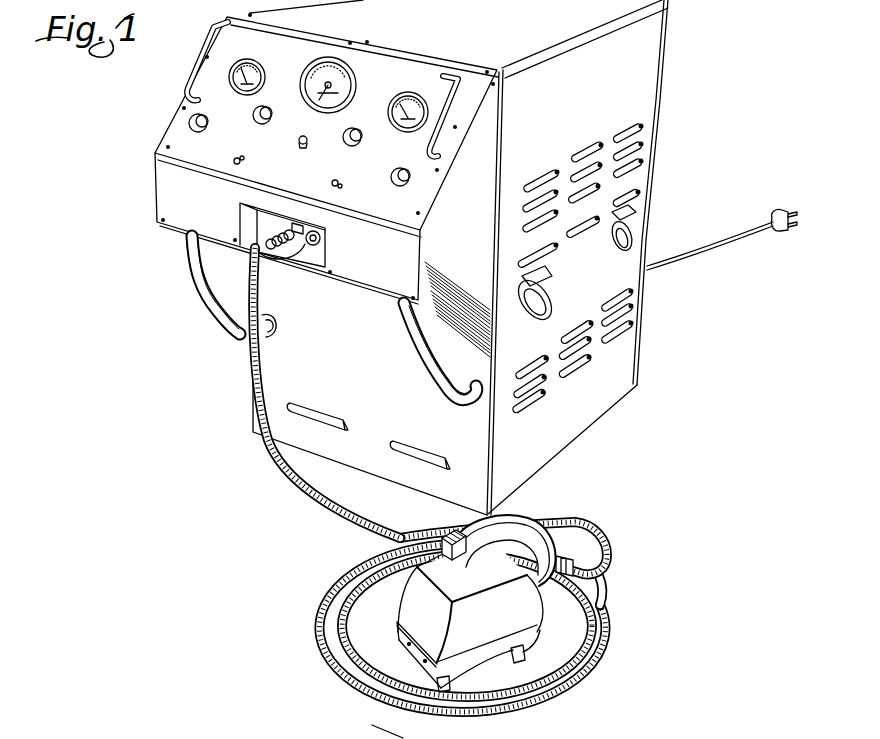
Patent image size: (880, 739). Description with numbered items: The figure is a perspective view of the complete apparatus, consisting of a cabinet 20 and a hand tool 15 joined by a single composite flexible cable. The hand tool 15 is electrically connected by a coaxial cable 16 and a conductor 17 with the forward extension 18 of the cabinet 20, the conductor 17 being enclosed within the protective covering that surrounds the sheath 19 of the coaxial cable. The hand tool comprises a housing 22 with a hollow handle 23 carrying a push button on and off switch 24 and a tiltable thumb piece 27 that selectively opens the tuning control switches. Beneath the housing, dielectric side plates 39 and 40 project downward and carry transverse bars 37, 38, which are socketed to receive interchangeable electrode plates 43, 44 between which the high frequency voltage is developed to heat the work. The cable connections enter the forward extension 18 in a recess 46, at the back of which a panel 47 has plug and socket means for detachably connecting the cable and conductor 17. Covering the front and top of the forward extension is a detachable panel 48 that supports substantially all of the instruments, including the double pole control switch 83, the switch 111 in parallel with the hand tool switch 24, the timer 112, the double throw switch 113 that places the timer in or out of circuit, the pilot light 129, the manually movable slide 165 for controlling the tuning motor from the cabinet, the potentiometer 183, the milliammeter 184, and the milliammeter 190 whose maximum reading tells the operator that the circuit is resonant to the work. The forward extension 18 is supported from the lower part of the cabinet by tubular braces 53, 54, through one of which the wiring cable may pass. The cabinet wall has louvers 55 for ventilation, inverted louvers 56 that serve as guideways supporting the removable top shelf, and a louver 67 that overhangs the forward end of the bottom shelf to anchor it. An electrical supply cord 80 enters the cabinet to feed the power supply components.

The hand tool 15 is at (427, 605).
The coaxial cable 16 is at (335, 507).
The conductor 17 is at (278, 262).
The forward extension 18 is at (463, 192).
The sheath 19 is at (252, 272).
The cabinet 20 is at (638, 101).
The housing 22 is at (525, 617).
The hollow handle 23 is at (530, 525).
The push button type on and off switch 24 is at (487, 550).
The tiltable thumb piece 27 is at (447, 543).
The bar 37 is at (420, 660).
The bar 38 is at (535, 645).
The dielectric side plate 39 is at (487, 655).
The dielectric side plate 40 is at (397, 630).
The electrode plate 43 is at (447, 685).
The electrode plate 44 is at (525, 655).
The recess 46 is at (247, 219).
The panel 47 is at (317, 250).
The panel 48 is at (300, 57).
The tubular brace 53 is at (208, 292).
The tubular brace 54 is at (420, 360).
The louvers 55 is at (616, 158).
The louvers 56 is at (552, 250).
The louver 67 is at (392, 445).
The electrical supply cord 80 is at (730, 247).
The double pole control switch 83 is at (342, 187).
The switch 111 is at (303, 144).
The timer 112 is at (357, 87).
The double throw switch 113 is at (255, 148).
The pilot light 129 is at (400, 170).
The manually movable slide 165 is at (346, 140).
The potentiometer 183 is at (273, 115).
The milliammeter 184 is at (415, 93).
The milliammeter 190 is at (255, 62).